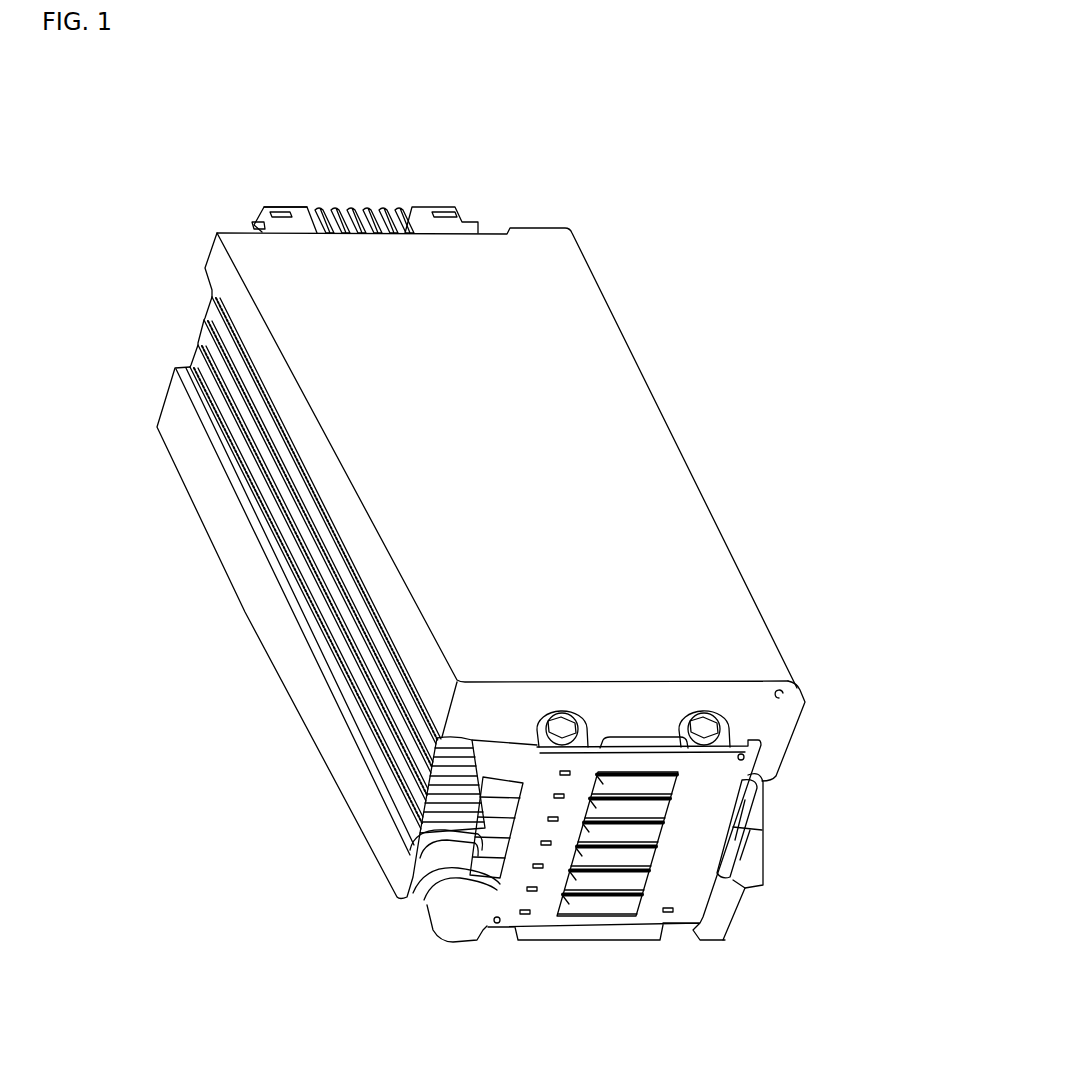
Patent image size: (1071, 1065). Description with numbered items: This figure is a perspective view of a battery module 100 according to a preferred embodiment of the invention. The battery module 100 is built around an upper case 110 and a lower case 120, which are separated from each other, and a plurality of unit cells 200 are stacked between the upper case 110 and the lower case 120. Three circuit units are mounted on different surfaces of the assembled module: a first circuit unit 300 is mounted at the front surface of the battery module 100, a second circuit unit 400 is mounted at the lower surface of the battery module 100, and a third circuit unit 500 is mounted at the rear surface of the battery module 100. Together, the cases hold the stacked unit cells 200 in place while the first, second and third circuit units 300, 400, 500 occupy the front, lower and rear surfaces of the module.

The battery module 100 is at (85, 115).
The upper case 110 is at (627, 433).
The lower case 120 is at (267, 607).
The unit cells 200 is at (267, 502).
The first circuit unit 300 is at (770, 865).
The second circuit unit 400 is at (292, 710).
The third circuit unit 500 is at (465, 187).